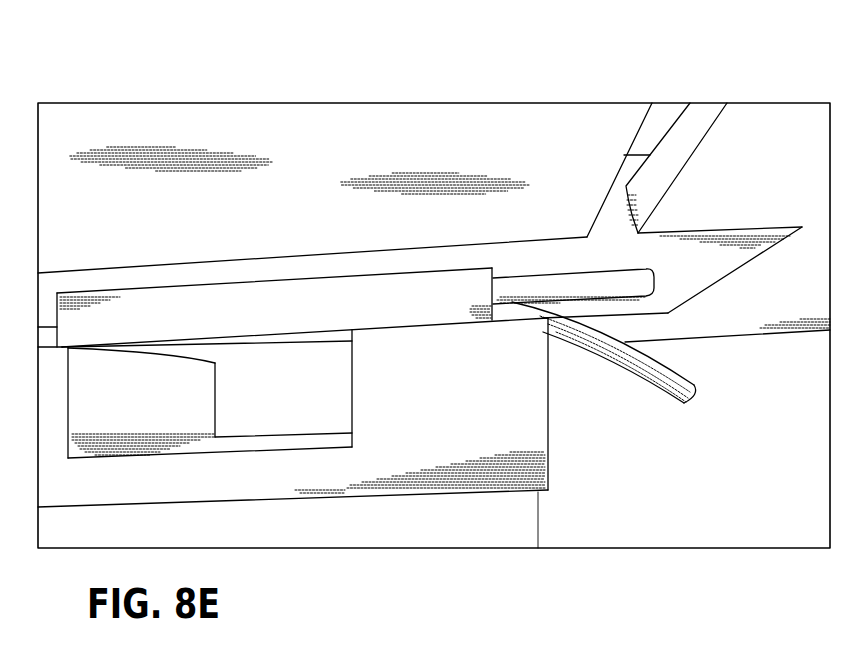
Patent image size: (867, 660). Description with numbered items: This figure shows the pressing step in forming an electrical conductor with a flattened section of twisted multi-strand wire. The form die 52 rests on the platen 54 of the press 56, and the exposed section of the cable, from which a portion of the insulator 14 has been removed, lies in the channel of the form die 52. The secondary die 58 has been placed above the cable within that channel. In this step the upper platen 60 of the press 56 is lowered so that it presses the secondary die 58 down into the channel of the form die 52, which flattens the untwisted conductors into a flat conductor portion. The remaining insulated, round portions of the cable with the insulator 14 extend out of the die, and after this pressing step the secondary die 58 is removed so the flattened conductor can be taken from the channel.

The press 56 is at (58, 76).
The upper platen 60 is at (313, 117).
The form die 52 is at (240, 300).
The secondary die 58 is at (583, 285).
The insulator 14 is at (679, 378).
The platen 54 is at (522, 462).